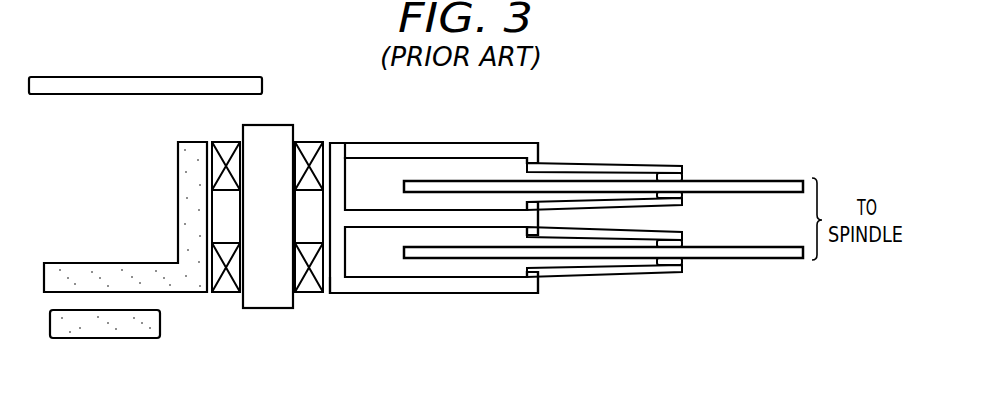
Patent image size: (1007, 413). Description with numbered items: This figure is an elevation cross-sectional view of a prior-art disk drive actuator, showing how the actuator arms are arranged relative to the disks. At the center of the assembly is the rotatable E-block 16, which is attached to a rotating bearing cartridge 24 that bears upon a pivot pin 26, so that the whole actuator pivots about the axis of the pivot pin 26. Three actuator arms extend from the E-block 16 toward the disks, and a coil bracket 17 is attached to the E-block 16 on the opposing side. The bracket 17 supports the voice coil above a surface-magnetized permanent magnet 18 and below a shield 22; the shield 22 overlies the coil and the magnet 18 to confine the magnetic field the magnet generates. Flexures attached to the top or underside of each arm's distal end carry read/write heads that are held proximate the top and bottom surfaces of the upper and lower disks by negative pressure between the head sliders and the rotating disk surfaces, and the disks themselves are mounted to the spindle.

The shield 22 is at (63, 76).
The permanent magnet 18 is at (78, 340).
The bracket 17 is at (78, 262).
The bearing cartridge 24 is at (220, 294).
The pivot pin 26 is at (278, 309).
The E-block 16 is at (362, 142).